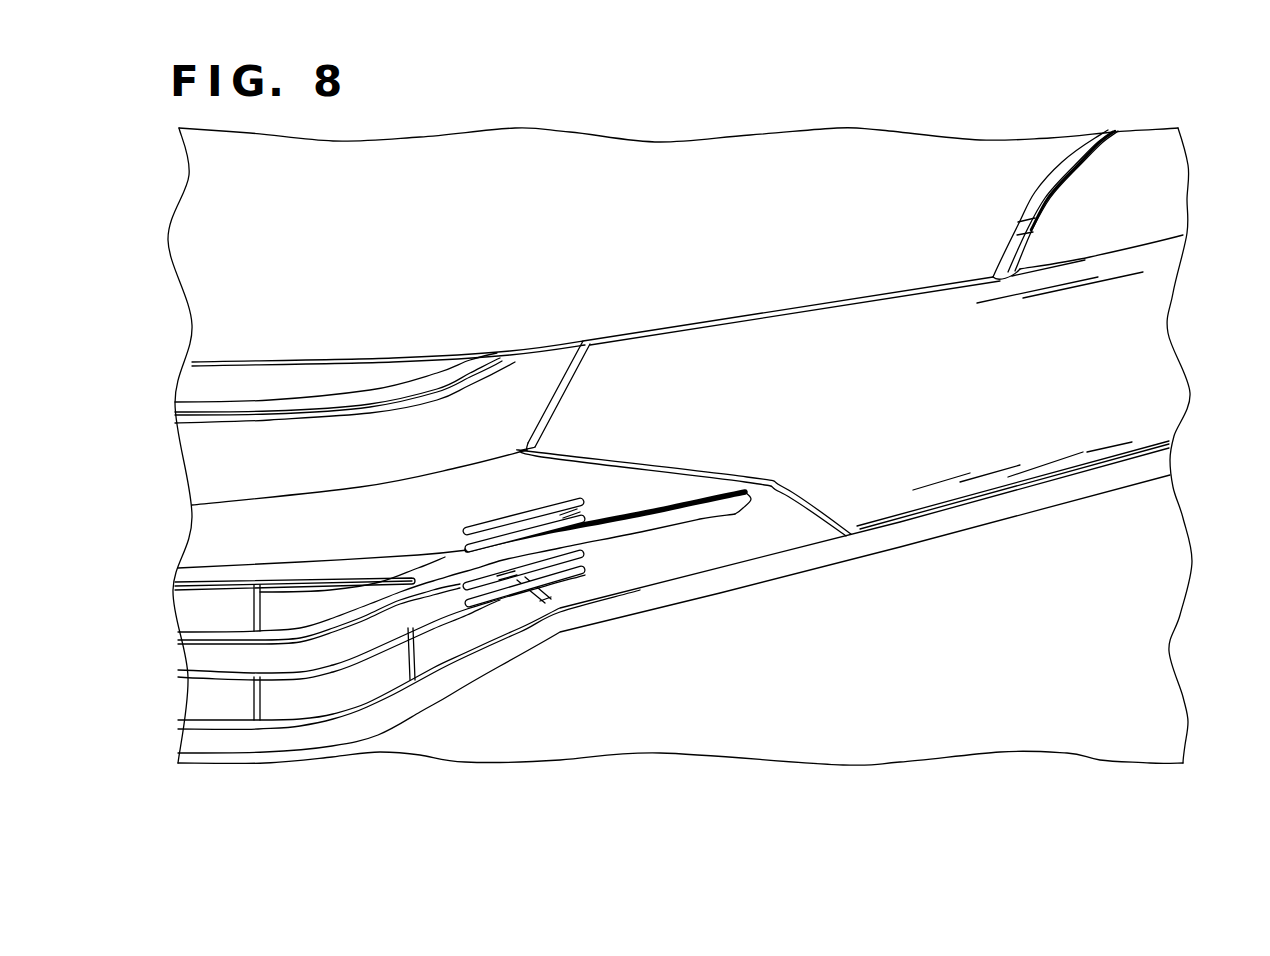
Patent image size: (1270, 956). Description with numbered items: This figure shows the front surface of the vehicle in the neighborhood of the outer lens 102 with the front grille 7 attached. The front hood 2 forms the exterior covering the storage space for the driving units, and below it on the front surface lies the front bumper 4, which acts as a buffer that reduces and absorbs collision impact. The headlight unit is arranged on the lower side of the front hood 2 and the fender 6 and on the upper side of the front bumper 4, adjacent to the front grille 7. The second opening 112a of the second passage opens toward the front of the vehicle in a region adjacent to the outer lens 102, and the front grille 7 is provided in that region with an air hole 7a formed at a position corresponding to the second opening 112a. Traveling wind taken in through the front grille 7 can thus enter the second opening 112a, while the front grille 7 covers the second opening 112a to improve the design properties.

The front hood 2 is at (872, 157).
The front bumper 4 is at (995, 723).
The fender 6 is at (1135, 190).
The front grille 7 is at (217, 533).
The air hole 7a is at (490, 593).
The outer lens 102 is at (1135, 343).
The second opening 112a is at (530, 530).